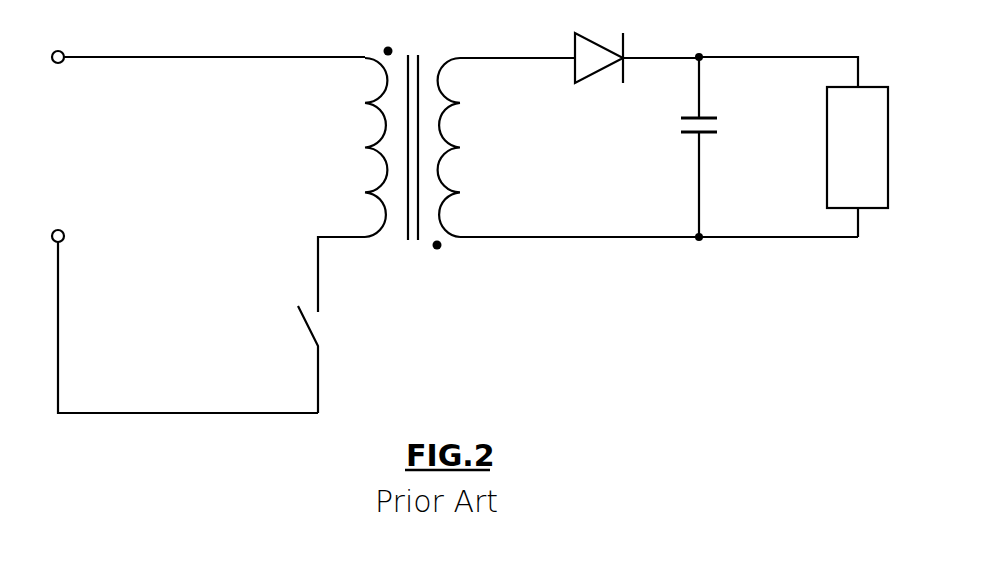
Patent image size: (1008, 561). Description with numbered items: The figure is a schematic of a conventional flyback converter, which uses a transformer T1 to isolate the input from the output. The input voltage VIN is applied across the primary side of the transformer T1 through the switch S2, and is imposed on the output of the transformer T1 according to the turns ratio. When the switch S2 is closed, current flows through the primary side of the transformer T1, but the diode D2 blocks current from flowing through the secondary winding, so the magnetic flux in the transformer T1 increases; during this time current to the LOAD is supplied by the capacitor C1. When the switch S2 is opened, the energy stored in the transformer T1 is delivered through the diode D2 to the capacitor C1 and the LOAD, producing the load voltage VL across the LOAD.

The input voltage VIN is at (58, 68).
The transformer T1 is at (588, 180).
The switch S2 is at (328, 359).
The diode D2 is at (637, 70).
The capacitor C1 is at (769, 147).
The load voltage VL is at (798, 72).
The load LOAD is at (857, 162).